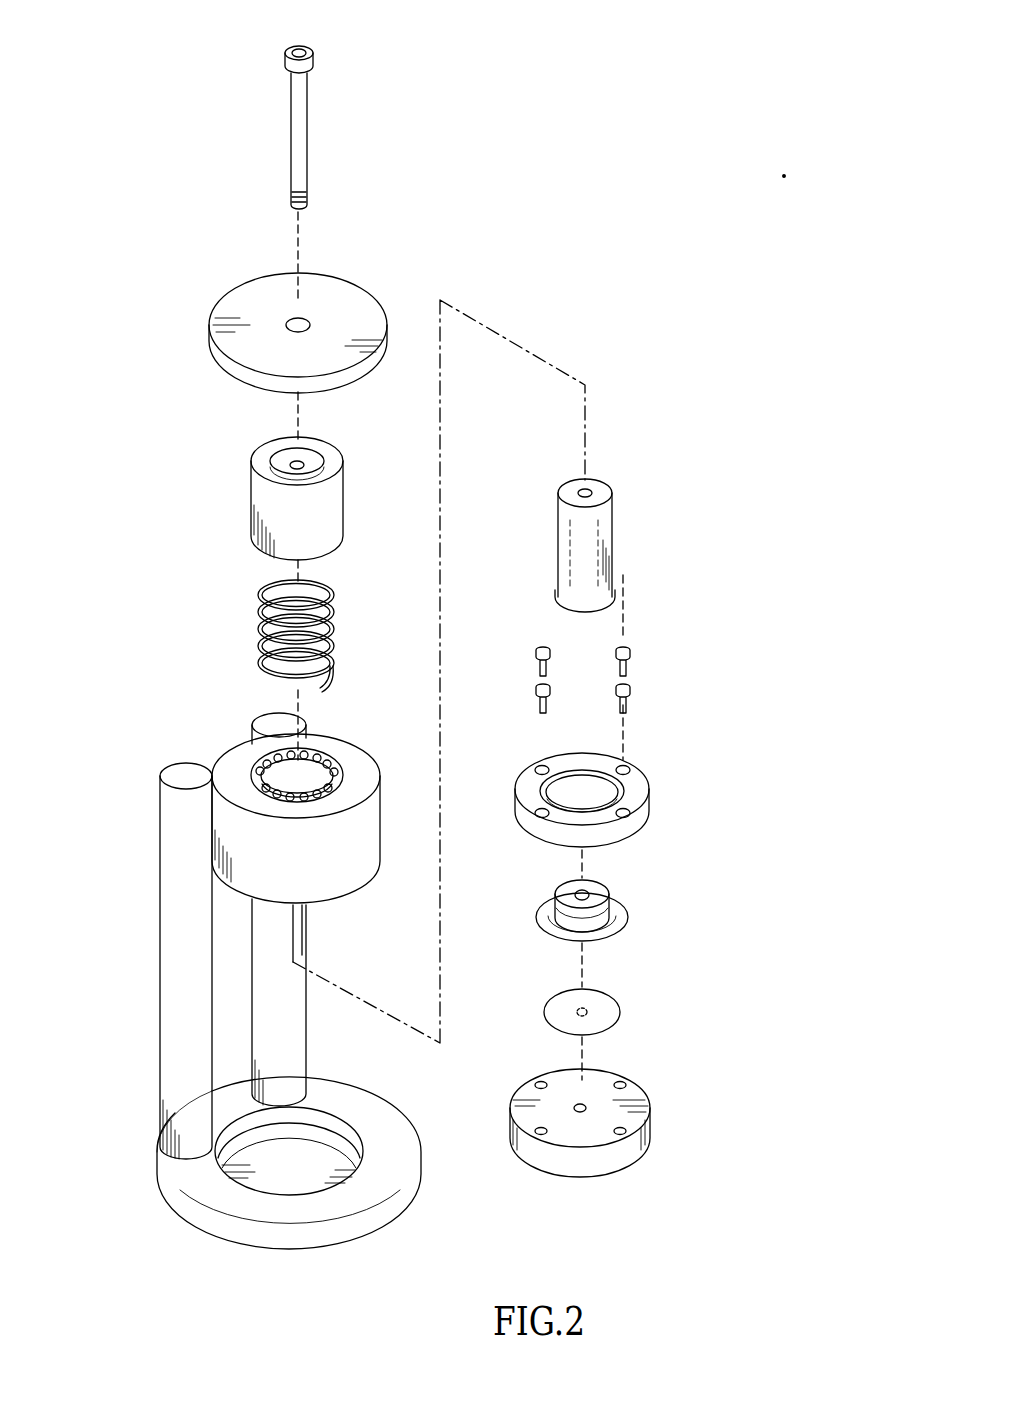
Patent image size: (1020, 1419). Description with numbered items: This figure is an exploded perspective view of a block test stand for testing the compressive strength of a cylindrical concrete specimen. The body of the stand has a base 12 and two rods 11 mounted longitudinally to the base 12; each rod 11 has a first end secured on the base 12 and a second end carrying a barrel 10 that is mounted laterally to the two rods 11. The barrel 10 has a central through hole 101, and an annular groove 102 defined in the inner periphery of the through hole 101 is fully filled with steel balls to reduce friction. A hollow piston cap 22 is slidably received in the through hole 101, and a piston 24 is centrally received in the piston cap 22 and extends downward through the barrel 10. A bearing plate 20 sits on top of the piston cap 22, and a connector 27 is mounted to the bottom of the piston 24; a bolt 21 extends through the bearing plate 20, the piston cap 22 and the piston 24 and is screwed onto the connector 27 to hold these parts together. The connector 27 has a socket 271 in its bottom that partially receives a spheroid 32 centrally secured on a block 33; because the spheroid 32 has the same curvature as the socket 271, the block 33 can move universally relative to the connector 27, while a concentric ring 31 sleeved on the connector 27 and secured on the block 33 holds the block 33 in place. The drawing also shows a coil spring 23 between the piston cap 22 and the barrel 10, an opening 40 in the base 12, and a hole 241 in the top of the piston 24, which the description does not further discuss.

The bolt 21 is at (313, 50).
The bearing plate 20 is at (248, 300).
The piston cap 22 is at (263, 503).
The spring 23 is at (260, 618).
The annular groove 102 is at (265, 755).
The through hole 101 is at (272, 775).
The barrel 10 is at (233, 779).
The rods 11 is at (190, 1037).
The base 12 is at (260, 1195).
The opening 40 is at (288, 1175).
The hole 241 is at (600, 478).
The piston 24 is at (661, 513).
The concentric ring 31 is at (640, 800).
The socket 271 is at (625, 905).
The connector 27 is at (657, 907).
The spheroid 32 is at (605, 1015).
The block 33 is at (628, 1148).